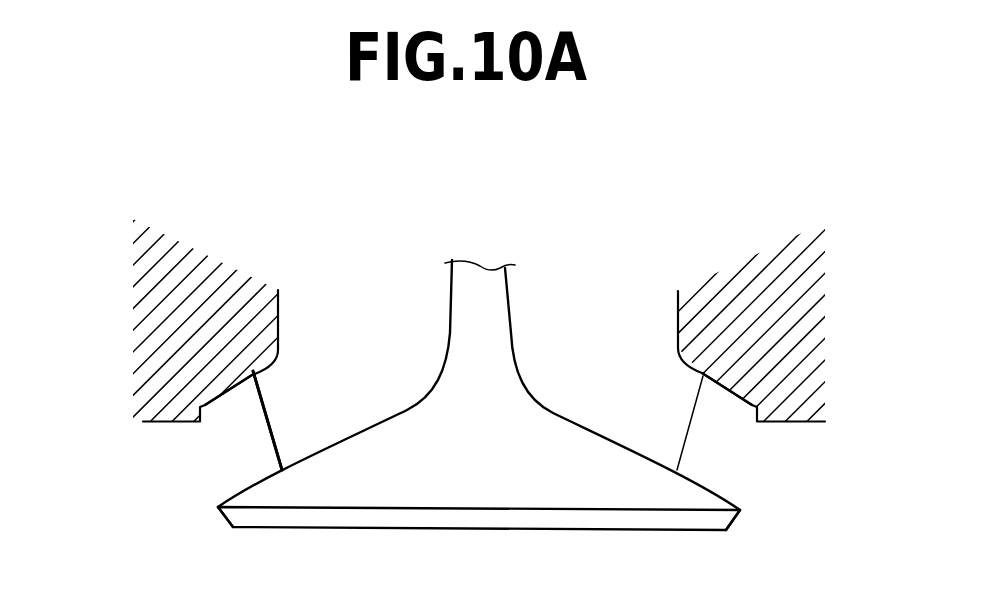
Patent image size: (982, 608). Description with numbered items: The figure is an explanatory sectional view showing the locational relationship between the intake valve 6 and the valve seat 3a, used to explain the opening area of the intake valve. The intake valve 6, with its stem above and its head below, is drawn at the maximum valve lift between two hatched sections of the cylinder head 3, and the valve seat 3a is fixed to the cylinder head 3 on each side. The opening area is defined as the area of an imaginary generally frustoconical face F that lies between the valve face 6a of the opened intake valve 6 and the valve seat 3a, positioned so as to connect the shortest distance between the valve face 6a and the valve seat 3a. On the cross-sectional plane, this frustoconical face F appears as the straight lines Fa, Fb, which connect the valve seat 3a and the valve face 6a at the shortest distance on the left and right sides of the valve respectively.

The cylinder head 3 is at (210, 267).
The valve seat 3a is at (266, 362).
The intake valve 6 is at (400, 393).
The valve face 6a is at (244, 493).
The imaginary generally frustoconical face F is at (247, 422).
The straight line Fa is at (275, 448).
The straight line Fb is at (685, 442).